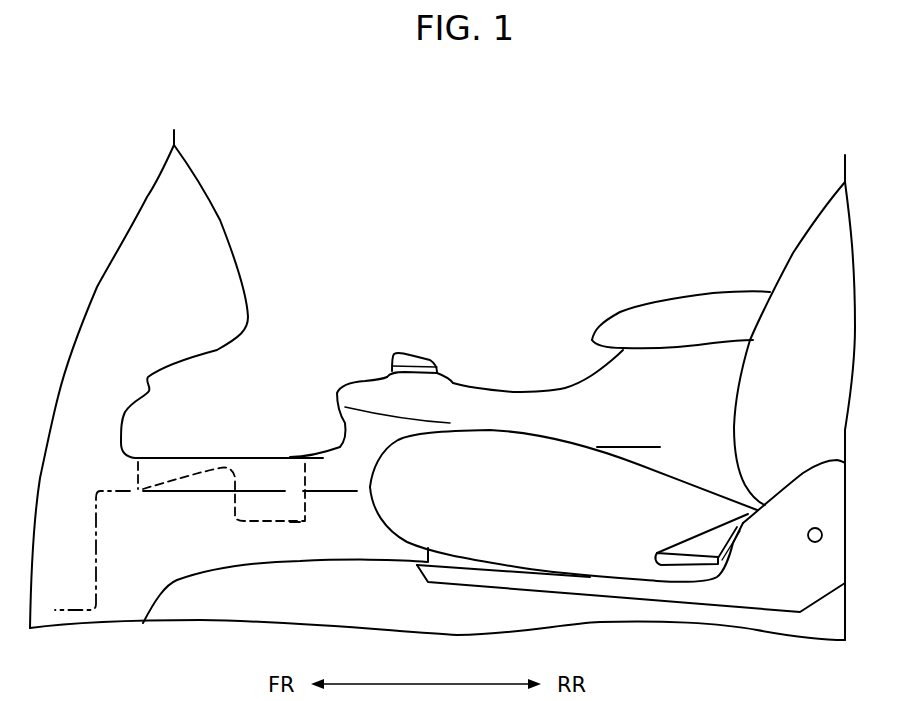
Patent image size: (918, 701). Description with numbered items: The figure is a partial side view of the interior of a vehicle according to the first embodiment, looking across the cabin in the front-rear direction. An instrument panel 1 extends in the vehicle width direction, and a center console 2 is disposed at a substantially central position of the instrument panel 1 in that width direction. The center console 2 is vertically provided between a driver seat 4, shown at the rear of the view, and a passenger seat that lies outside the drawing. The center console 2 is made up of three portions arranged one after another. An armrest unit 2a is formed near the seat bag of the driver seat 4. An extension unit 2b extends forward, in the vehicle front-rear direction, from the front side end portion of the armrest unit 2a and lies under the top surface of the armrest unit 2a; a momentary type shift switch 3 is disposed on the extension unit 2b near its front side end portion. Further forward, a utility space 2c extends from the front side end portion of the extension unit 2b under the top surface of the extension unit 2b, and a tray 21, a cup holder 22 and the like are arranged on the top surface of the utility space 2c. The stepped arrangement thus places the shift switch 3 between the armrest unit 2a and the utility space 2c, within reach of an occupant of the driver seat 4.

The instrument panel 1 is at (202, 183).
The center console 2 is at (497, 350).
The armrest unit 2a is at (687, 296).
The extension unit 2b is at (530, 390).
The utility space 2c is at (222, 454).
The tray 21 is at (165, 483).
The cup holder 22 is at (237, 482).
The momentary type shift switch 3 is at (409, 352).
The driver seat 4 is at (613, 453).